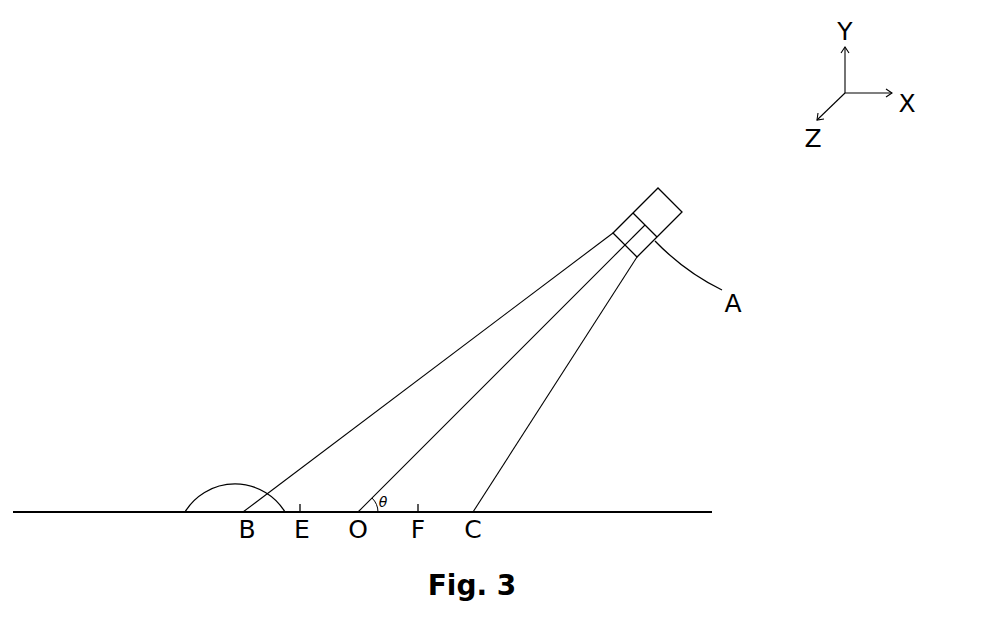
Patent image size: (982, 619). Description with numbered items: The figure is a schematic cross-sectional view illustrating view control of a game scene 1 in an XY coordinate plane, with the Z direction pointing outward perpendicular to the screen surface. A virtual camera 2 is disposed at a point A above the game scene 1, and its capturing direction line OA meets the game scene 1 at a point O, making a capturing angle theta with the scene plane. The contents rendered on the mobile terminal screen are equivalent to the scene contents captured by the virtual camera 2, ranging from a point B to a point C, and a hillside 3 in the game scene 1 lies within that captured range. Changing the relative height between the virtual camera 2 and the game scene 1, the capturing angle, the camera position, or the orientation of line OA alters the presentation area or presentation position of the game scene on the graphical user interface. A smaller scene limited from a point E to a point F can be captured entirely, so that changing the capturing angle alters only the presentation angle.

The game scene 1 is at (136, 512).
The virtual camera 2 is at (632, 210).
The hillside 3 is at (228, 482).